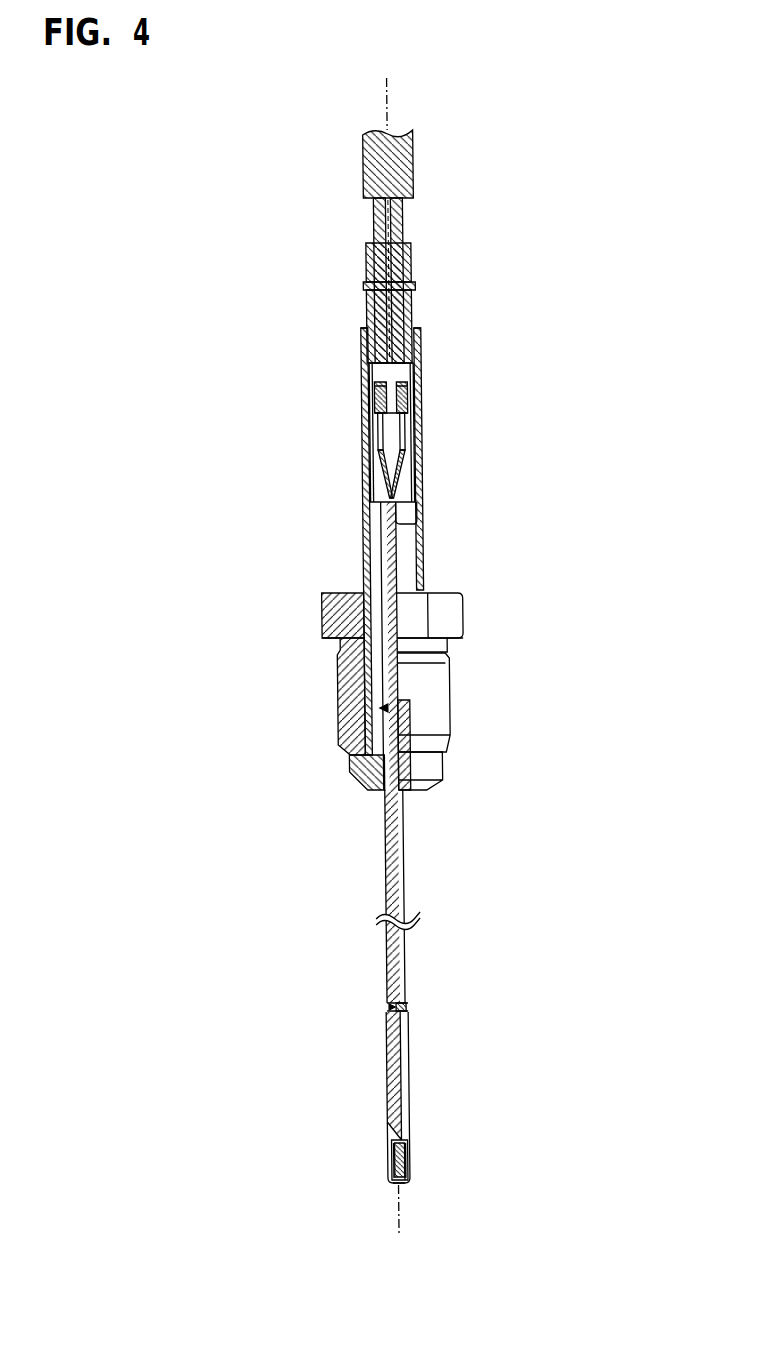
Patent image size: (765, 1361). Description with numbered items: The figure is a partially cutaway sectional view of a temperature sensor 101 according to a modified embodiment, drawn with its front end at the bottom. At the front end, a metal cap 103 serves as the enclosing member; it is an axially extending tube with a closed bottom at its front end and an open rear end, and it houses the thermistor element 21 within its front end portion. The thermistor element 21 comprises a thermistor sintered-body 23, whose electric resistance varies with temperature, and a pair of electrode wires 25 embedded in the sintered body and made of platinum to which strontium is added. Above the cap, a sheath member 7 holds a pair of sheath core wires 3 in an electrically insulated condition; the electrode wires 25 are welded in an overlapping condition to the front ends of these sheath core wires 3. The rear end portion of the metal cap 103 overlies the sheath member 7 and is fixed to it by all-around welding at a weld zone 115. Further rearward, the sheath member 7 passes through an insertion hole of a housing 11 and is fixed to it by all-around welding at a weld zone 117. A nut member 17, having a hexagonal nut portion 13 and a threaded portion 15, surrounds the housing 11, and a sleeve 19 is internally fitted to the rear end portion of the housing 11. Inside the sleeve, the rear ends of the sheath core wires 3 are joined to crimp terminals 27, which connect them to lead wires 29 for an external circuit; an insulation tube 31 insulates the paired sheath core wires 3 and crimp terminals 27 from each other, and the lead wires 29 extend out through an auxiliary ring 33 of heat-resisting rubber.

The temperature sensor 101 is at (203, 279).
The lead wires 29 is at (372, 223).
The auxiliary ring 33 is at (412, 260).
The crimp terminals 27 is at (372, 418).
The insulation tube 31 is at (412, 460).
The sheath core wires 3 is at (379, 480).
The sleeve 19 is at (361, 508).
The hexagonal nut portion 13 is at (460, 608).
The threaded portion 15 is at (445, 672).
The nut member 17 is at (454, 691).
The weld zone 117 is at (382, 708).
The housing 11 is at (345, 763).
The sheath member 7 is at (379, 952).
The weld zone 115 is at (399, 1008).
The metal cap 103 is at (381, 1141).
The thermistor element 21 is at (378, 1176).
The electrode wires 25 is at (396, 1170).
The thermistor sintered-body 23 is at (393, 1185).